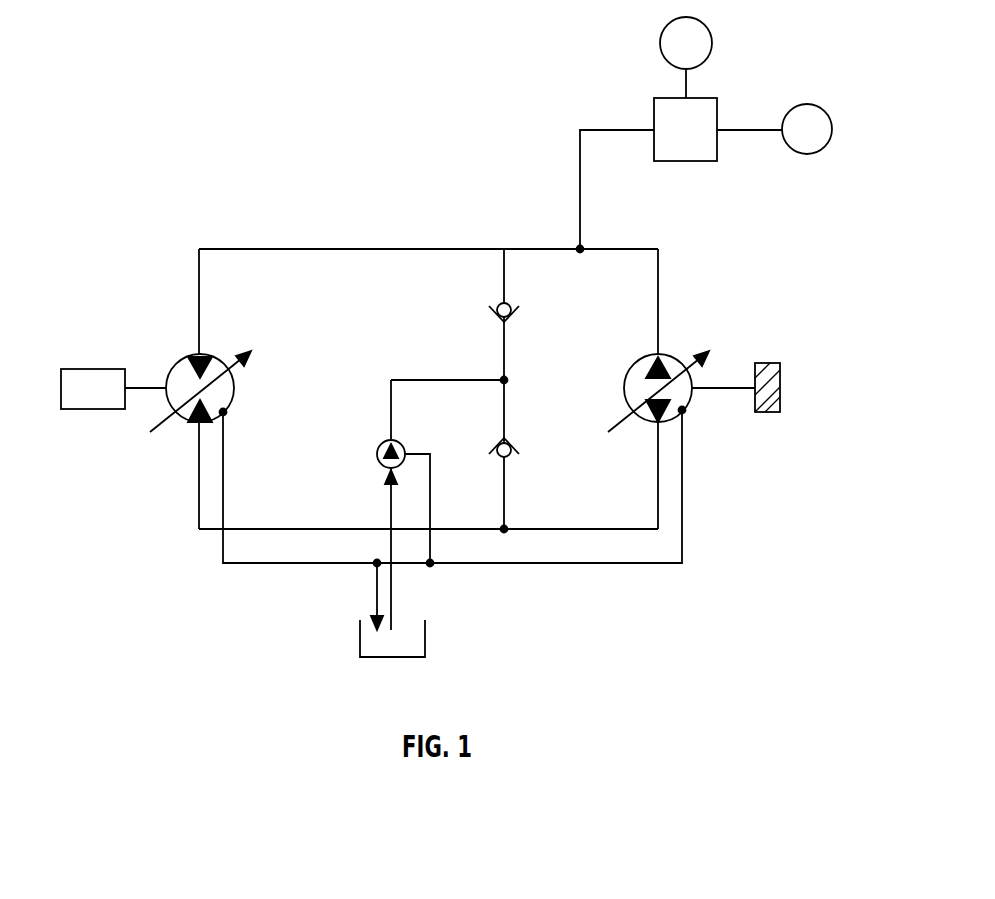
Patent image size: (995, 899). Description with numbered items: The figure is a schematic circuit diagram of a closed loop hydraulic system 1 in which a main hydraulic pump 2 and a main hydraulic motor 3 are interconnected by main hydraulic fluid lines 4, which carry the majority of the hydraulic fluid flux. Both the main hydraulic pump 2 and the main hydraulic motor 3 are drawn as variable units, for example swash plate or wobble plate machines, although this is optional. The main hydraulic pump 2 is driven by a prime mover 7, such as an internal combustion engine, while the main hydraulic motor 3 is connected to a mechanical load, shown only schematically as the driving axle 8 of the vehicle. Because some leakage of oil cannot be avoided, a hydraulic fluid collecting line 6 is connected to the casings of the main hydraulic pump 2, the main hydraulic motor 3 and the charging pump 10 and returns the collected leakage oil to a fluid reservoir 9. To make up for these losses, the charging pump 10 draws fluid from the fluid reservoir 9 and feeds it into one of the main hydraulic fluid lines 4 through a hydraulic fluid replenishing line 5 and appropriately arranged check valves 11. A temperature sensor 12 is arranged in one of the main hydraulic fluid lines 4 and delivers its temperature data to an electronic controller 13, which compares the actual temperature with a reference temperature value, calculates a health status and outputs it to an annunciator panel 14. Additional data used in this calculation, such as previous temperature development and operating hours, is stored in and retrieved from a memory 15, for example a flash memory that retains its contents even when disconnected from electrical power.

The closed loop hydraulic system 1 is at (700, 223).
The main hydraulic pump 2 is at (216, 357).
The main hydraulic motor 3 is at (671, 355).
The main hydraulic fluid lines 4 is at (340, 249).
The hydraulic fluid replenishing line 5 is at (432, 380).
The hydraulic fluid collecting line 6 is at (572, 565).
The prime mover 7 is at (92, 369).
The driving axle 8 is at (780, 388).
The fluid reservoir 9 is at (360, 638).
The charging pump 10 is at (381, 444).
The check valves 11 is at (510, 306).
The temperature sensor 12 is at (582, 249).
The electronic controller 13 is at (673, 142).
The annunciator panel 14 is at (807, 154).
The memory 15 is at (673, 57).